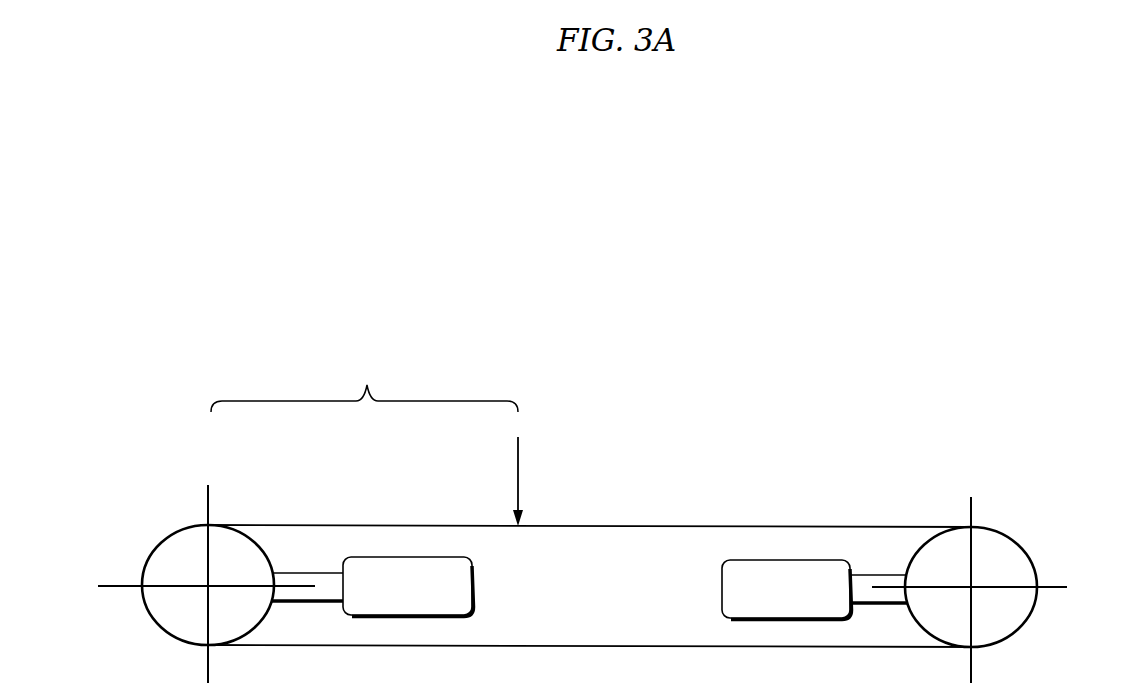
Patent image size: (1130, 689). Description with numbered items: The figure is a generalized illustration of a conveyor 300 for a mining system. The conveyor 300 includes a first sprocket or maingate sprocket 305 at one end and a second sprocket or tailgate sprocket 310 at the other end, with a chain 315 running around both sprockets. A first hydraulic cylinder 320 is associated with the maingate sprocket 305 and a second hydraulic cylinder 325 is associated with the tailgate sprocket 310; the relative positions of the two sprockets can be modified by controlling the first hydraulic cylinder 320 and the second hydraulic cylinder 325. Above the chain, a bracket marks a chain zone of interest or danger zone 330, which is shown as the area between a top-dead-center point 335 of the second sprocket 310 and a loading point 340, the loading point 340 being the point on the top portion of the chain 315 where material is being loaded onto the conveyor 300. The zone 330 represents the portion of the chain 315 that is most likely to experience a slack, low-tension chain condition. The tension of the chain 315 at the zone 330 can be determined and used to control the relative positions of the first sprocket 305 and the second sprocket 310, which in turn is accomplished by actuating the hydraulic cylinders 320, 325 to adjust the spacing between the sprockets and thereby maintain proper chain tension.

The conveyor 300 is at (262, 267).
The maingate sprocket 305 is at (1022, 548).
The tailgate sprocket 310 is at (165, 539).
The chain 315 is at (723, 526).
The first hydraulic cylinder 320 is at (720, 588).
The second hydraulic cylinder 325 is at (474, 590).
The chain zone of interest 330 is at (364, 379).
The top-dead-center point 335 is at (208, 523).
The loading point 340 is at (518, 477).